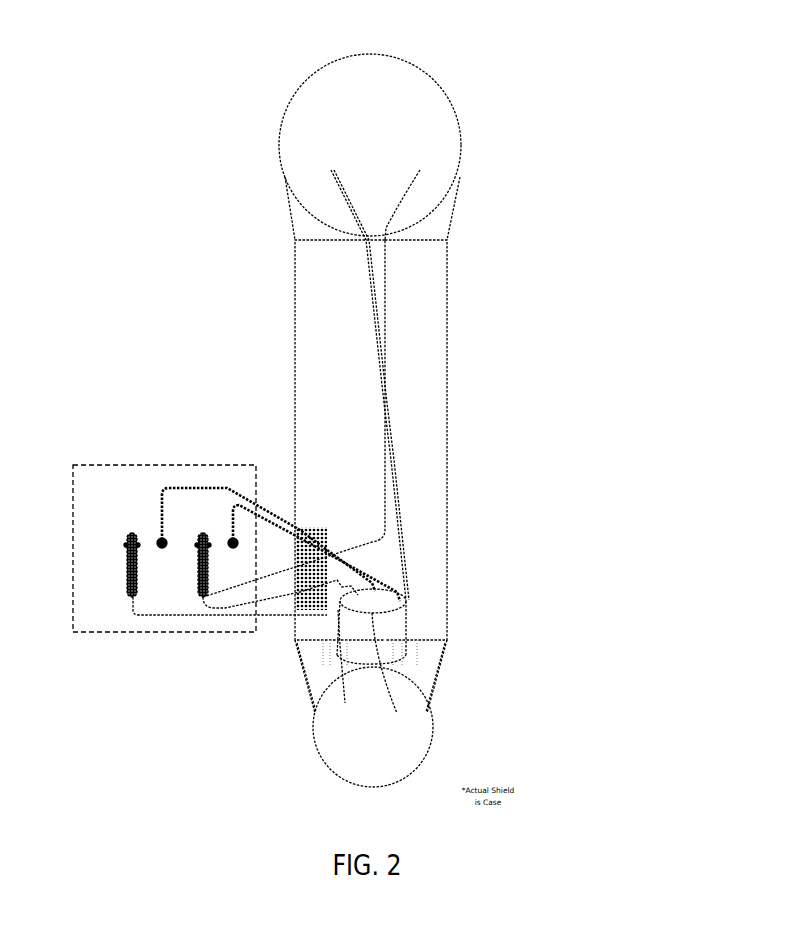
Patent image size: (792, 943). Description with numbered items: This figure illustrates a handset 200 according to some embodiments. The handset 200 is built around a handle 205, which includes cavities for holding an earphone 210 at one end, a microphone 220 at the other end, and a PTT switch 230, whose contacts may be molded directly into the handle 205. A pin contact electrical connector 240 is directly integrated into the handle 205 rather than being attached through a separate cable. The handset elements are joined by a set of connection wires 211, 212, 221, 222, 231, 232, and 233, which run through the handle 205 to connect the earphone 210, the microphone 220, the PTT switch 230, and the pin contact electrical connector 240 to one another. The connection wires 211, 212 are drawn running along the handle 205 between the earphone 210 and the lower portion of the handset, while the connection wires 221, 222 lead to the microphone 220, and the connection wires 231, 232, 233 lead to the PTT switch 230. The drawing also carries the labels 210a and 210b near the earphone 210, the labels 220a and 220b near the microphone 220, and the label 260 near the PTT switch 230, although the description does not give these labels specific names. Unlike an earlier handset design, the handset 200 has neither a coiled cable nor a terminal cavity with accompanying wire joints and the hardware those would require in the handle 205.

The handset 200 is at (138, 87).
The handle 205 is at (225, 211).
The earphone 210 is at (370, 134).
The white wire from cable 210a is at (359, 361).
The earphone black lead 210b is at (321, 360).
The connection wire 211 is at (340, 440).
The connection wire 212 is at (416, 440).
The microphone 220 is at (373, 743).
The microphone left lead/connection 220a is at (290, 696).
The microphone right lead/connection 220b is at (456, 696).
The connection wire 221 is at (341, 699).
The connection wire 222 is at (394, 694).
The PTT switch 230 is at (164, 572).
The connection wire 231 is at (270, 612).
The connection wire 232 is at (231, 494).
The connection wire 233 is at (155, 492).
The pin contact electrical connector 240 is at (414, 628).
The PTT switch cavity 260 is at (335, 546).